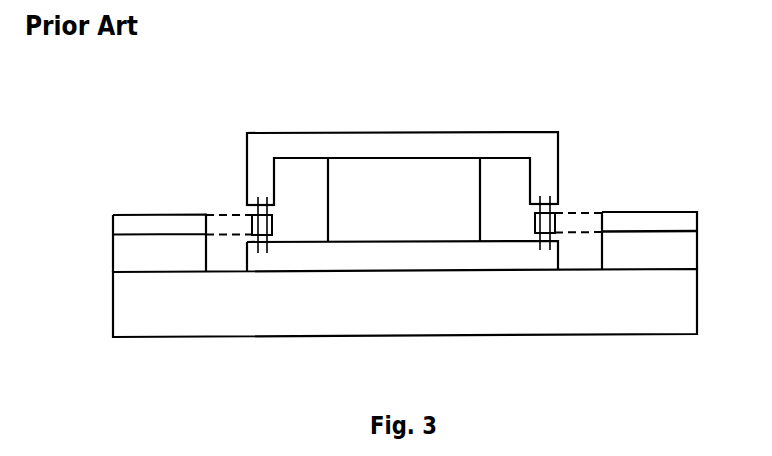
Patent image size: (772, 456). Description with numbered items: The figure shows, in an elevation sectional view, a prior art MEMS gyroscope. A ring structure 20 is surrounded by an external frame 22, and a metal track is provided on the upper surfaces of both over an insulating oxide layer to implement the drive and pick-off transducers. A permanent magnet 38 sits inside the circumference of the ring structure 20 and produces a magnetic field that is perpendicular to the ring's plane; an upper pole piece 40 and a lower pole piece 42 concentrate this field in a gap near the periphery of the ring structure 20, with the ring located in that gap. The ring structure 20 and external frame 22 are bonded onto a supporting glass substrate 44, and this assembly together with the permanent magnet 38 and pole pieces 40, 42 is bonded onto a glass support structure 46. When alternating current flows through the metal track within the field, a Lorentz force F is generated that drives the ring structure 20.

The ring structure 20 is at (556, 213).
The external frame 22 is at (637, 222).
The permanent magnet 38 is at (347, 178).
The upper pole piece 40 is at (252, 190).
The lower pole piece 42 is at (282, 255).
The supporting glass substrate 44 is at (688, 253).
The glass support structure 46 is at (527, 310).
The Lorentz force F is at (272, 207).